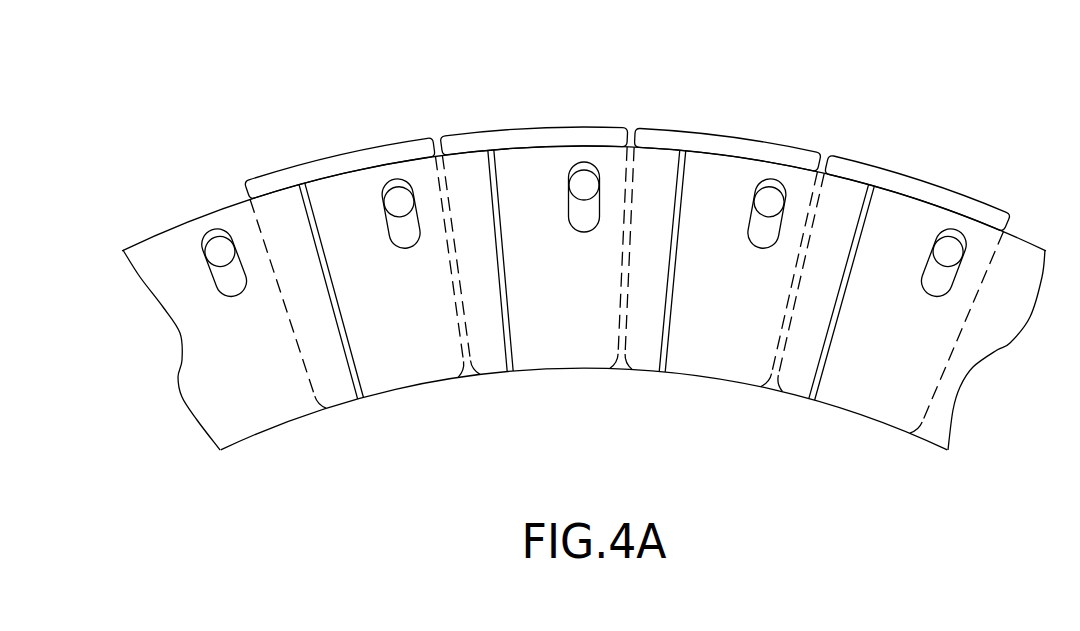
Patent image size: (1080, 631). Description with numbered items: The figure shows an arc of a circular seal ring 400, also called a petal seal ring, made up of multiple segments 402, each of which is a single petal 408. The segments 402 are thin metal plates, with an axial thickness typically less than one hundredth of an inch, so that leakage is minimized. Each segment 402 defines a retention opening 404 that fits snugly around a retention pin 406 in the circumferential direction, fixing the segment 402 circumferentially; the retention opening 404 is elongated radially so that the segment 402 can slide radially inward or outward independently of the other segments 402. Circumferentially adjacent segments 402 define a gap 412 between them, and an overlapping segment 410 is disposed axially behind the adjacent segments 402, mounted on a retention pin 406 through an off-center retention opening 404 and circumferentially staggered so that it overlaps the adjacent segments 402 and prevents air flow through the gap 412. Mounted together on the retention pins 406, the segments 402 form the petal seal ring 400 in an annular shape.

The seal ring 400 is at (180, 97).
The segment 402 is at (610, 157).
The retention opening 404 is at (577, 232).
The retention pin 406 is at (583, 183).
The petal 408 is at (530, 355).
The overlapping segment 410 is at (333, 157).
The gap 412 is at (682, 157).